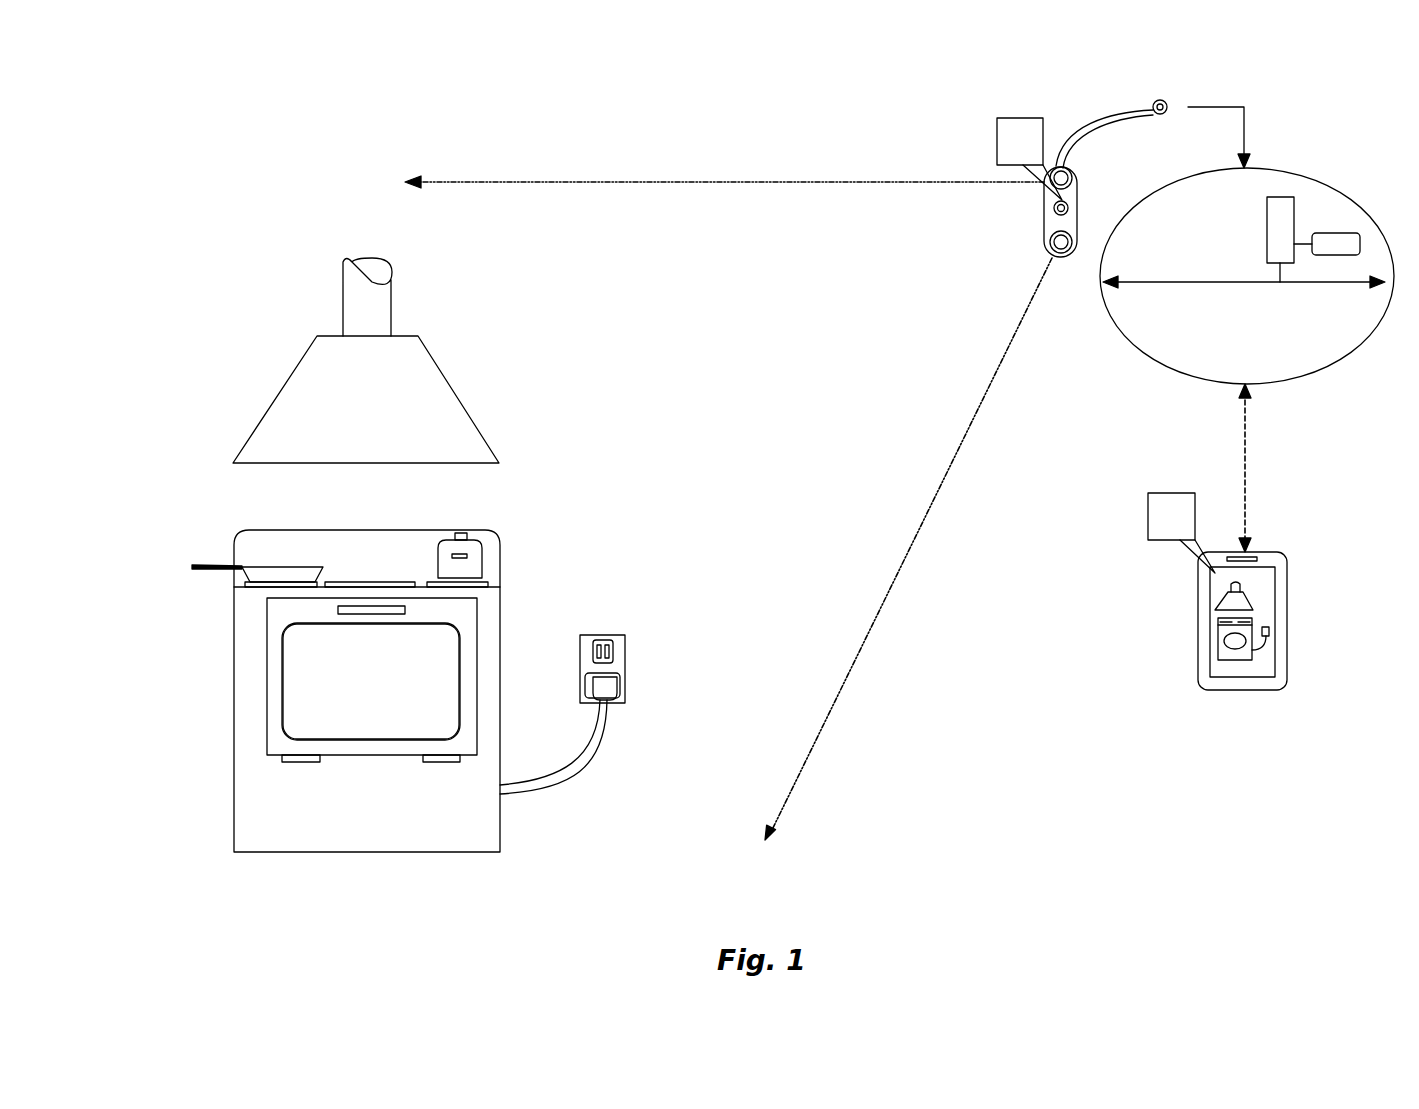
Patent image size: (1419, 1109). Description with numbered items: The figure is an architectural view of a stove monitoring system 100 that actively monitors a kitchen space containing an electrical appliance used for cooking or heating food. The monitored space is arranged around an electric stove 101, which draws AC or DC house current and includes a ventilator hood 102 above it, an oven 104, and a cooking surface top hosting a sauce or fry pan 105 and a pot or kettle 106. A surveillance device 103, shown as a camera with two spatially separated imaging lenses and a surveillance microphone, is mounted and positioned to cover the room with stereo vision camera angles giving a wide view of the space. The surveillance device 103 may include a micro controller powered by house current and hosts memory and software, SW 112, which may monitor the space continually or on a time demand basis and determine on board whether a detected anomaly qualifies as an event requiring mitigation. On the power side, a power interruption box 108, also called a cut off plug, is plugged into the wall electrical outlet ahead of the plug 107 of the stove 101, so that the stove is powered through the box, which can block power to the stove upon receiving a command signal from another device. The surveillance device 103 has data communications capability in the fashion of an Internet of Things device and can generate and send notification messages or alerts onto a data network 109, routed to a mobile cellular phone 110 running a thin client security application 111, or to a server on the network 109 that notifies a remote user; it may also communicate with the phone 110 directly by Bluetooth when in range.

The stove monitoring system 100 is at (318, 188).
The electric stove 101 is at (230, 753).
The ventilator hood 102 is at (278, 392).
The surveillance device 103 is at (1043, 198).
The oven 104 is at (478, 658).
The sauce or fry pan 105 is at (285, 567).
The pot or kettle 106 is at (485, 560).
The plug 107 is at (603, 685).
The power interruption box 108 is at (585, 685).
The data network 109 is at (1162, 362).
The mobile cellular phone 110 is at (1200, 610).
The thin client security application 111 is at (1172, 493).
The SW 112 is at (995, 148).